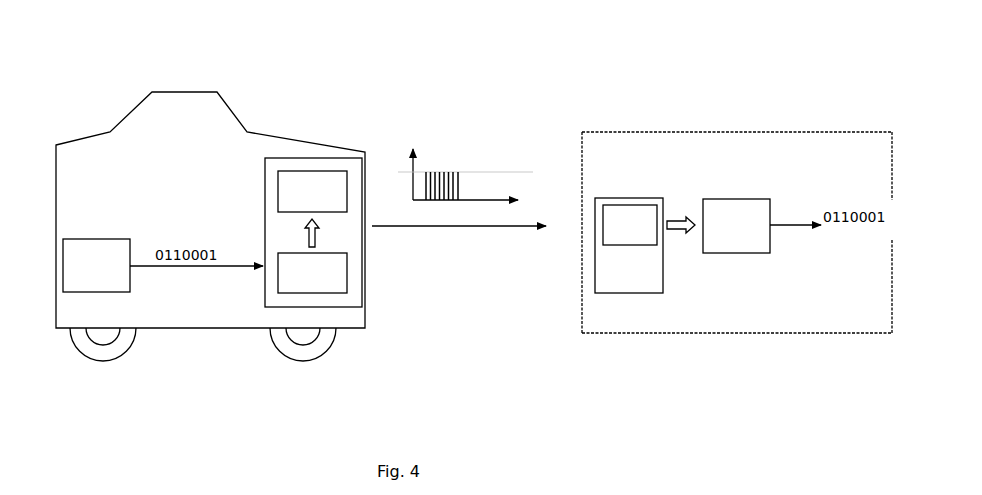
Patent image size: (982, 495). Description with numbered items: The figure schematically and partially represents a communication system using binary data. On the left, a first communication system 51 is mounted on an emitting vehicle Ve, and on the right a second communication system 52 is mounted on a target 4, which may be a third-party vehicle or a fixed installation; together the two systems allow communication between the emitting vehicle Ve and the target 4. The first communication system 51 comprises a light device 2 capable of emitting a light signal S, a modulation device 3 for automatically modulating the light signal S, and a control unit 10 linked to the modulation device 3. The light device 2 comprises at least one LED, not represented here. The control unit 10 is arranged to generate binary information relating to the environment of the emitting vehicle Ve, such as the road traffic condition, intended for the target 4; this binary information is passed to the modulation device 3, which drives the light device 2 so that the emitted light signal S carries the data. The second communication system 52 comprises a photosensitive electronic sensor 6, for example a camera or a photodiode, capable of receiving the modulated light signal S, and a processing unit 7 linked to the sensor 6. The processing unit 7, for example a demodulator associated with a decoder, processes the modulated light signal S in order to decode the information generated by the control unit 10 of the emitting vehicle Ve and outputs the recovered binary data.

The emitting vehicle Ve is at (182, 336).
The control unit 10 is at (104, 250).
The first communication system 51 is at (360, 86).
The light device 2 is at (301, 181).
The modulation device 3 is at (286, 282).
The light signal S is at (438, 151).
The second communication system 52 is at (656, 88).
The target 4 is at (578, 286).
The photosensitive electronic sensor 6 is at (636, 211).
The processing unit 7 is at (744, 211).